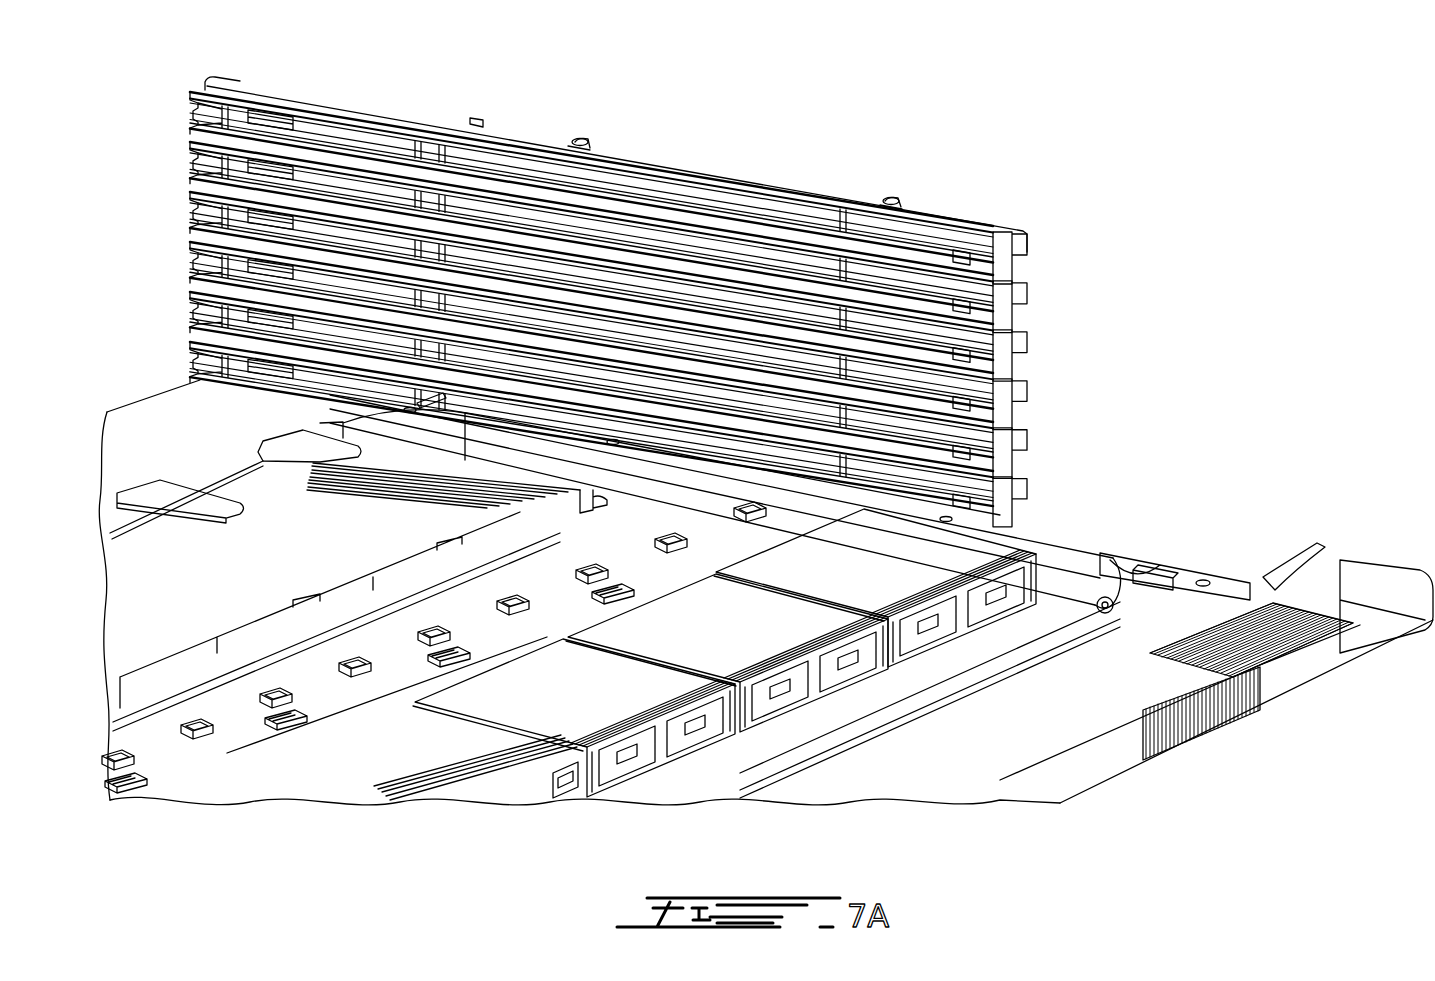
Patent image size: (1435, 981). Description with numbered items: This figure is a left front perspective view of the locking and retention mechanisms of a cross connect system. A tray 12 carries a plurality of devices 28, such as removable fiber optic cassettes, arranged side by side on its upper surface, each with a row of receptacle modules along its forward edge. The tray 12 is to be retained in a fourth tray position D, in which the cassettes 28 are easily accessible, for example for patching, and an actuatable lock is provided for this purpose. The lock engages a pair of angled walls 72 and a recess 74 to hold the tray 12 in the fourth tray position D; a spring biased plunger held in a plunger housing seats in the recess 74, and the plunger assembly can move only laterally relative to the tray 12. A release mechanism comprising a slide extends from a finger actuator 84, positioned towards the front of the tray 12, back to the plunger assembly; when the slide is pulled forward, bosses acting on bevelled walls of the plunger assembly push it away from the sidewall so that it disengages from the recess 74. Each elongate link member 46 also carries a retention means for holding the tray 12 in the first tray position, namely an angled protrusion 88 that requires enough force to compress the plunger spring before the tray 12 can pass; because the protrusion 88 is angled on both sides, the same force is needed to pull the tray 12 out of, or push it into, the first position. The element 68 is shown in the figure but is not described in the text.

The tray 12 is at (1213, 658).
The device 28 is at (932, 583).
The elongate link member 46 is at (810, 280).
The latch bar 68 is at (1062, 545).
The angled walls 72 is at (462, 212).
The recess 74 is at (410, 215).
The finger actuator 84 is at (1155, 572).
The angled protrusion 88 is at (238, 167).
The fourth tray position D is at (1173, 747).